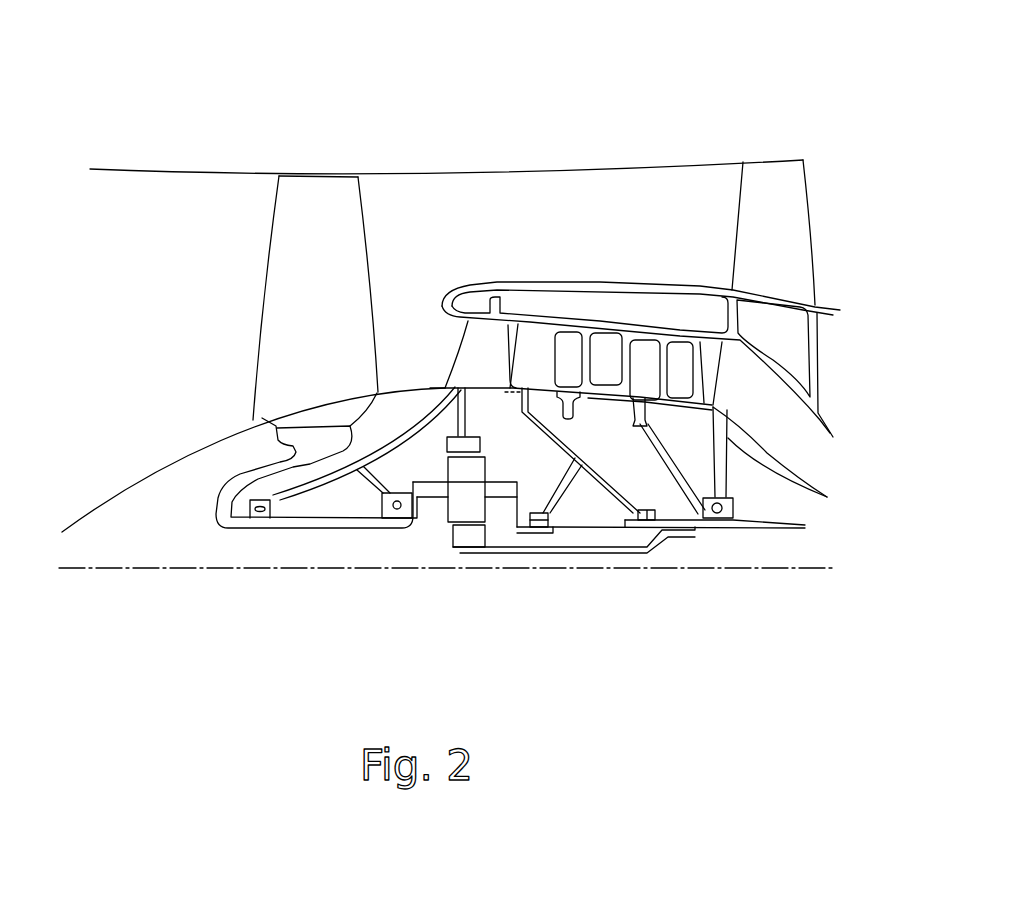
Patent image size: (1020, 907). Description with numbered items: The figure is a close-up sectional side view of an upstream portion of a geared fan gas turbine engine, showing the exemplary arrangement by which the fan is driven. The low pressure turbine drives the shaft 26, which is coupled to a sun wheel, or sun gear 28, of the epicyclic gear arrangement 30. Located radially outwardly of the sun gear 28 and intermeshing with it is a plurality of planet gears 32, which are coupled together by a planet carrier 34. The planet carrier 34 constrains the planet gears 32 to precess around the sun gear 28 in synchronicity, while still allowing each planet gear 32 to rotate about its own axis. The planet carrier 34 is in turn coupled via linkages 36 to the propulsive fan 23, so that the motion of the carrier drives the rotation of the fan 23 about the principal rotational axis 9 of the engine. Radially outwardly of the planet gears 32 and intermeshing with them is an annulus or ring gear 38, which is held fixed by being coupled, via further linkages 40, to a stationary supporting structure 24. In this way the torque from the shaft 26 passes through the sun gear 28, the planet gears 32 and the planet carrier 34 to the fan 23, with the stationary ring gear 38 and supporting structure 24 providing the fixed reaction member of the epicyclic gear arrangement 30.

The principal rotational axis 9 is at (245, 568).
The propulsive fan 23 is at (283, 302).
The stationary supporting structure 24 is at (475, 350).
The shaft 26 is at (612, 547).
The sun gear 28 is at (468, 537).
The epicyclic gearbox 30 is at (417, 543).
The planet gears 32 is at (453, 507).
The planet carrier 34 is at (507, 523).
The linkages 36 is at (422, 507).
The ring gear 38 is at (445, 447).
The linkages 40 is at (470, 422).